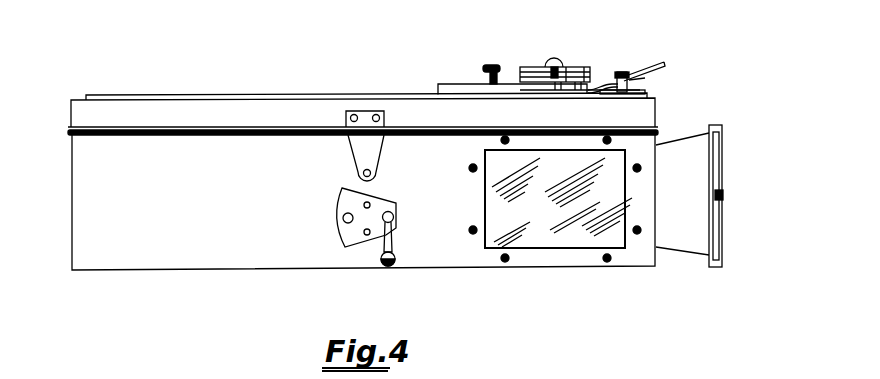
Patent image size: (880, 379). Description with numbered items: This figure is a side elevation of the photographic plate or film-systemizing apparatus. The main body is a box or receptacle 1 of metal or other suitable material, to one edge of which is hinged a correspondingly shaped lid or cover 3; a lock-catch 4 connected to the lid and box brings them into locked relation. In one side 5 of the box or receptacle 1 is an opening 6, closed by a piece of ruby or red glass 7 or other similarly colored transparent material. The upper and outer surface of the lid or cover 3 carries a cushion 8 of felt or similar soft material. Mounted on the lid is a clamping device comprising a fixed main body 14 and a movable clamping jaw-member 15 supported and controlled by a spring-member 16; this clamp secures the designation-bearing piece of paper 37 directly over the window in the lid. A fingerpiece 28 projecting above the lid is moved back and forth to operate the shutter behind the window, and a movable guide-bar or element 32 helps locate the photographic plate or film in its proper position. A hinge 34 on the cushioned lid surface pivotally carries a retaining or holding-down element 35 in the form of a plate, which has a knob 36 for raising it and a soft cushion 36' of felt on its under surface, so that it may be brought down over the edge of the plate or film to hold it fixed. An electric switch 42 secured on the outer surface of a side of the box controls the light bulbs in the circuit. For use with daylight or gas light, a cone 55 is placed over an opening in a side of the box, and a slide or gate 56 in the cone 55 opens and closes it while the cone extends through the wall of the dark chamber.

The box or receptacle 1 is at (152, 272).
The lid or cover 3 is at (90, 113).
The lock-catch 4 is at (358, 149).
The side 5 is at (86, 205).
The opening 6 is at (541, 249).
The ruby or red glass 7 is at (562, 202).
The cushion 8 is at (237, 95).
The main body 14 is at (646, 92).
The movable clamping jaw-member 15 is at (665, 63).
The spring-member 16 is at (645, 78).
The fingerpiece 28 is at (626, 71).
The movable guide-bar or element 32 is at (452, 84).
The hinge 34 is at (526, 67).
The retaining or holding-down element 35 is at (578, 67).
The knob 36 is at (549, 45).
The soft cushion 36' is at (494, 59).
The designation-bearing piece of paper 37 is at (596, 88).
The electric switch 42 is at (343, 218).
The cone 55 is at (690, 243).
The slide or gate 56 is at (716, 238).